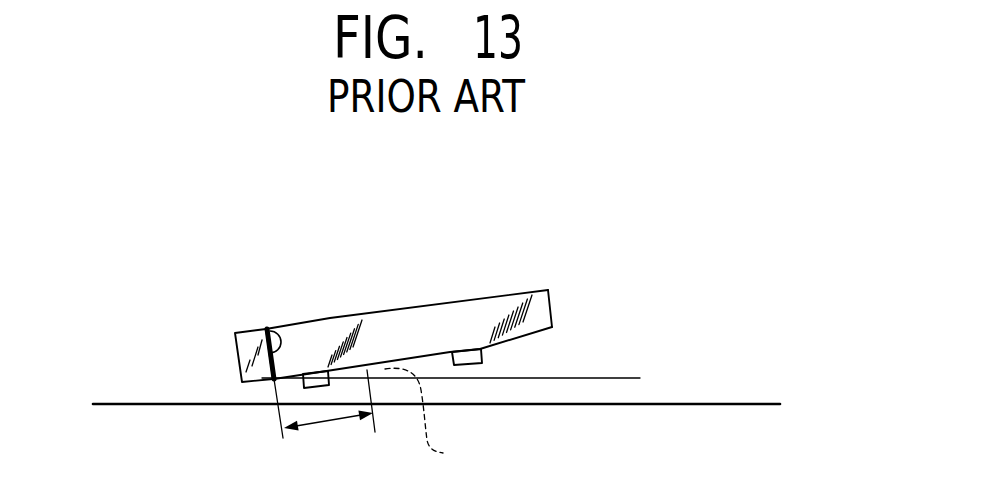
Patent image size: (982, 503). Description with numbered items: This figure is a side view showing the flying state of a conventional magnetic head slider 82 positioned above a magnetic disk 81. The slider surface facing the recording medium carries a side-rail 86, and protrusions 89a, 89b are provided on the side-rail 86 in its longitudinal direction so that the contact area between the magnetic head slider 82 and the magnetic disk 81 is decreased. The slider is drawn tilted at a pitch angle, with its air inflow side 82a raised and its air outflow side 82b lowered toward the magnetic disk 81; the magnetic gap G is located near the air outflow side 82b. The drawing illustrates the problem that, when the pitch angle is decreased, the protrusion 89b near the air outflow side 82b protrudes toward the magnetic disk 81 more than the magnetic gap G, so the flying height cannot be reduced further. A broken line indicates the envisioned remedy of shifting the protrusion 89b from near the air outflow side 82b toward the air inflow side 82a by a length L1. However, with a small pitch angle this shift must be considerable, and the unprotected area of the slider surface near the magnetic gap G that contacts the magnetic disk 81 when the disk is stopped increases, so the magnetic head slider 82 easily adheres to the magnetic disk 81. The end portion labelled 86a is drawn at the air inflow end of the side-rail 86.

The magnetic disk 81 is at (713, 403).
The magnetic head slider 82 is at (455, 280).
The air inflow side 82a is at (632, 325).
The air outflow side 82b is at (214, 390).
The side-rail 86 is at (333, 336).
The end electrode portion 86a is at (551, 328).
The protrusion 89a is at (482, 352).
The protrusion 89b is at (307, 390).
The magnetic gap G is at (278, 331).
The length L1 is at (324, 419).